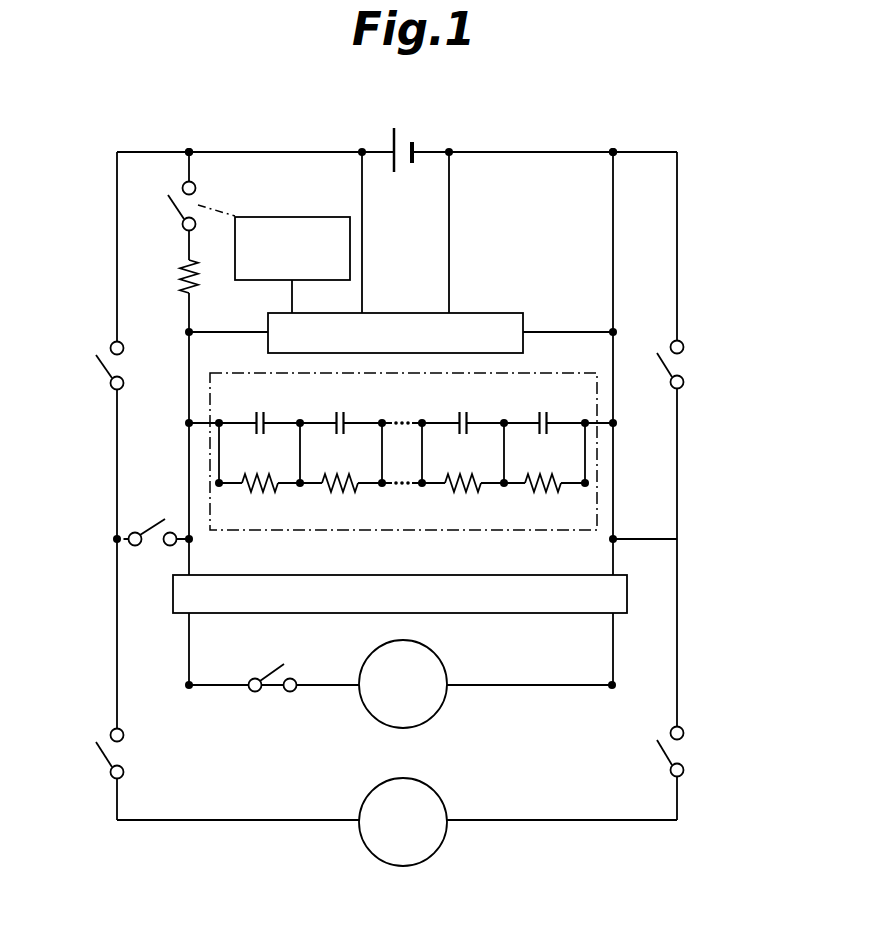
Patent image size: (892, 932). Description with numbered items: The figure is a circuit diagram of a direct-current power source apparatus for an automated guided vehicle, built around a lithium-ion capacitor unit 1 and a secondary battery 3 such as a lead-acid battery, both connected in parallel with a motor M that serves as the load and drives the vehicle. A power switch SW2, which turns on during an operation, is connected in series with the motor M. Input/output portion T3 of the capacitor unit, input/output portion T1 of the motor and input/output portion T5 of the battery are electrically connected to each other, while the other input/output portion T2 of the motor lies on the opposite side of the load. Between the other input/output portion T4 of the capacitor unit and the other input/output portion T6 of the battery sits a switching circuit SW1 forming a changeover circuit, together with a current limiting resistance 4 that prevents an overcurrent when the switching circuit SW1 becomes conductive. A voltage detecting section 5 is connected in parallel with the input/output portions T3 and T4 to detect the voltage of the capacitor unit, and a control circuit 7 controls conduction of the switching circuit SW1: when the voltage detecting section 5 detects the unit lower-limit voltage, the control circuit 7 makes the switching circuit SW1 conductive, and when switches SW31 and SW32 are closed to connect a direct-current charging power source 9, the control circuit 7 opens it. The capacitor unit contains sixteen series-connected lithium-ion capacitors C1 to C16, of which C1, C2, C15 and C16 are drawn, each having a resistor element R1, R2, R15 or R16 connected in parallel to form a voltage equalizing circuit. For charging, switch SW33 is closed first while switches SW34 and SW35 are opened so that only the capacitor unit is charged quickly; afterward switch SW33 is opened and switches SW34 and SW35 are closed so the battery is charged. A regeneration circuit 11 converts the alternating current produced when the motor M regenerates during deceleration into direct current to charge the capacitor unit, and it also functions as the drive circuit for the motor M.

The lithium-ion capacitor unit 1 is at (401, 432).
The secondary battery 3 is at (410, 138).
The current limiting resistance 4 is at (182, 288).
The voltage detecting section 5 is at (525, 322).
The control circuit 7 is at (294, 217).
The direct-current charging power source 9 is at (446, 842).
The regeneration circuit 11 is at (505, 575).
The motor M is at (364, 699).
The input/output portion T1 is at (608, 690).
The input/output portion T2 is at (186, 681).
The input/output portion T3 is at (618, 428).
The input/output portion T4 is at (185, 424).
The input/output portion T5 is at (617, 150).
The input/output portion T6 is at (189, 148).
The switching circuit SW1 is at (182, 216).
The power switch SW2 is at (282, 695).
The switch SW31 is at (122, 750).
The switch SW32 is at (684, 752).
The switch SW33 is at (150, 544).
The switch SW34 is at (106, 378).
The switch SW35 is at (683, 367).
The lithium-ion capacitor C1 is at (260, 408).
The lithium-ion capacitor C2 is at (340, 408).
The lithium-ion capacitor C15 is at (462, 408).
The lithium-ion capacitor C16 is at (542, 408).
The resistor element R1 is at (260, 498).
The resistor element R2 is at (340, 498).
The resistor element R15 is at (462, 498).
The resistor element R16 is at (542, 498).